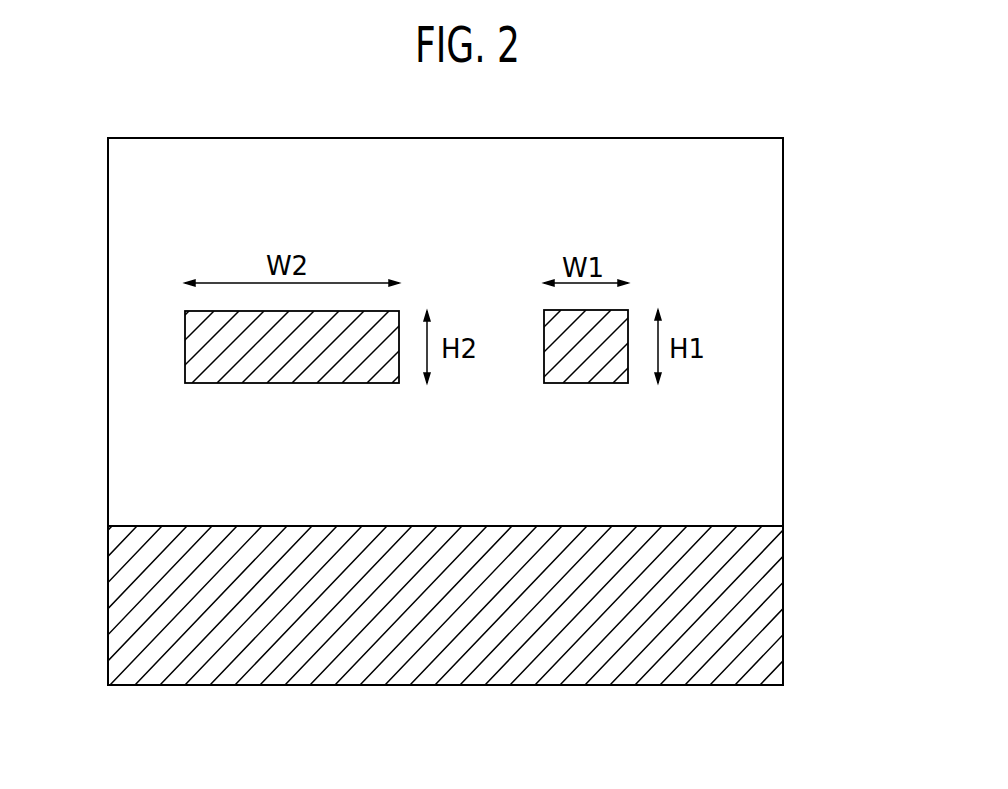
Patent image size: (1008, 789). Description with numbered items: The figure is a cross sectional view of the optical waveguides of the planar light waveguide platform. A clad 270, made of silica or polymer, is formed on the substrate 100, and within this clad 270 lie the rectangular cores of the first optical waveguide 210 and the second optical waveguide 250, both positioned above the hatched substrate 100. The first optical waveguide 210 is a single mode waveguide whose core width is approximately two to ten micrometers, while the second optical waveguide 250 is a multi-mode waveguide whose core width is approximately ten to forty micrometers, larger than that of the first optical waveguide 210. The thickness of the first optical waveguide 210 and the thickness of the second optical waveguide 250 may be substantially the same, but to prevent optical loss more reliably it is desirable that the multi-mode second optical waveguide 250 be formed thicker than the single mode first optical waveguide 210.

The substrate 100 is at (772, 597).
The first optical waveguide 210 is at (626, 314).
The second optical waveguide 250 is at (210, 365).
The clad 270 is at (772, 247).